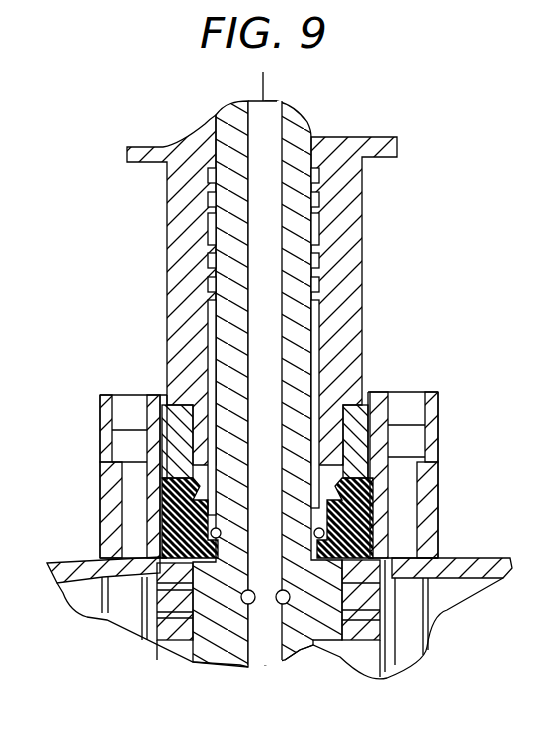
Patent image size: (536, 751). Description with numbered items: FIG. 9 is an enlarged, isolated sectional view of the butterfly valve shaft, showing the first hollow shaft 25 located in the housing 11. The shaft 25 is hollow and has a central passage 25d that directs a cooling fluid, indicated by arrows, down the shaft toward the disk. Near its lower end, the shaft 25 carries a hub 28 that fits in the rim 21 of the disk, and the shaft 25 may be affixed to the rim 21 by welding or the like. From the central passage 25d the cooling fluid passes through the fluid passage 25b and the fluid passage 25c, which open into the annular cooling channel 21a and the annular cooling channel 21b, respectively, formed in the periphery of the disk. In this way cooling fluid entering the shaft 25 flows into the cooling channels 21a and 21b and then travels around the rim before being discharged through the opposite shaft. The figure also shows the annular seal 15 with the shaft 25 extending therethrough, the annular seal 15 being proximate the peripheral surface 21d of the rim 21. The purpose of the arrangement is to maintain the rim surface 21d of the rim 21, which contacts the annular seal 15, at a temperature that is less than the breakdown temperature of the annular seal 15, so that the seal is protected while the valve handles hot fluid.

The housing 11 is at (352, 258).
The annular seal 15 is at (373, 513).
The rim 21 is at (420, 553).
The annular cooling channel 21a is at (165, 615).
The annular cooling channel 21b is at (360, 615).
The rim surface 21d is at (158, 556).
The first hollow shaft 25 is at (297, 325).
The fluid passage 25b is at (250, 604).
The fluid passage 25c is at (283, 604).
The central passage 25d is at (265, 372).
The hub 28 is at (205, 625).